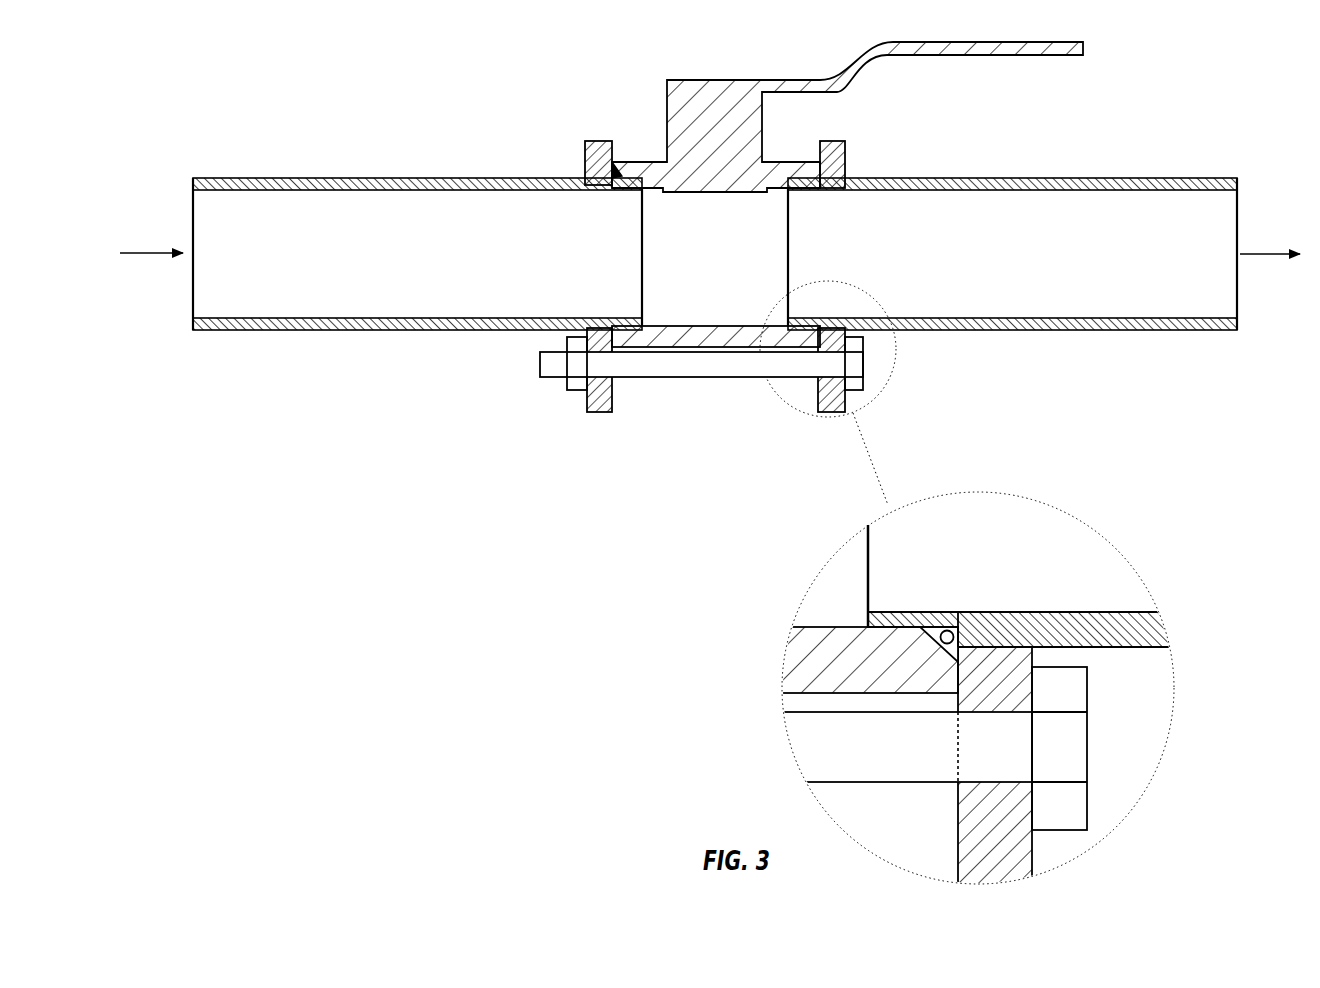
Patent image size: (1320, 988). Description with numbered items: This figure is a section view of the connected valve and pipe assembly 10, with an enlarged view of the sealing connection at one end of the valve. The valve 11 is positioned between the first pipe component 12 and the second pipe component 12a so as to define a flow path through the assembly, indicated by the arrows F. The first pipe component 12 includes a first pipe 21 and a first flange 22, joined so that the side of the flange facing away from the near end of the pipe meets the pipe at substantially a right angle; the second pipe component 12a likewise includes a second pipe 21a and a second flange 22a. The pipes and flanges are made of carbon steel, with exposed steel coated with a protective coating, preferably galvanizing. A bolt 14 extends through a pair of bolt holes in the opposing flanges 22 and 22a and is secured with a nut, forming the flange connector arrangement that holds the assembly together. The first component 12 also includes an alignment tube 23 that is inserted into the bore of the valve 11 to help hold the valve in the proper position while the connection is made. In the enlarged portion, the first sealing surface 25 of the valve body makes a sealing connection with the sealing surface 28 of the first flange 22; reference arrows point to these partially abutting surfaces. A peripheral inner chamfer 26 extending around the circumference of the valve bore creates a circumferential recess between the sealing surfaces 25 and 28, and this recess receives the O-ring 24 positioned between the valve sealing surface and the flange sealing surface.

The valve and pipe assembly 10 is at (196, 106).
The valve 11 is at (700, 80).
The first pipe component 12 is at (1115, 121).
The second pipe component 12a is at (329, 165).
The bolt 14 is at (663, 367).
The first pipe 21 is at (1148, 178).
The second pipe 21a is at (258, 330).
The first flange 22 is at (829, 142).
The second flange 22a is at (598, 412).
The alignment tube 23 is at (922, 612).
The O-ring 24 is at (977, 612).
The first sealing surface 25 is at (956, 668).
The chamfer 26 is at (913, 650).
The sealing surface 28 is at (960, 668).